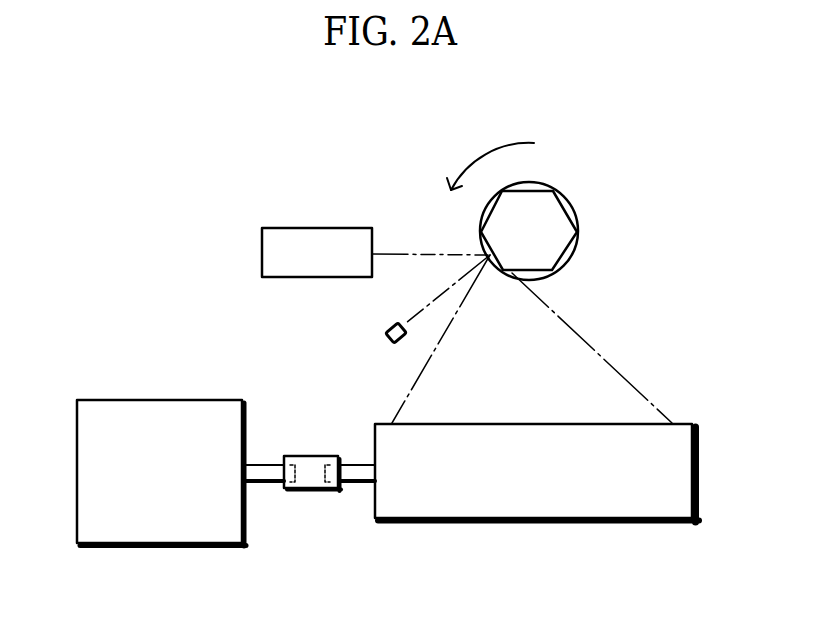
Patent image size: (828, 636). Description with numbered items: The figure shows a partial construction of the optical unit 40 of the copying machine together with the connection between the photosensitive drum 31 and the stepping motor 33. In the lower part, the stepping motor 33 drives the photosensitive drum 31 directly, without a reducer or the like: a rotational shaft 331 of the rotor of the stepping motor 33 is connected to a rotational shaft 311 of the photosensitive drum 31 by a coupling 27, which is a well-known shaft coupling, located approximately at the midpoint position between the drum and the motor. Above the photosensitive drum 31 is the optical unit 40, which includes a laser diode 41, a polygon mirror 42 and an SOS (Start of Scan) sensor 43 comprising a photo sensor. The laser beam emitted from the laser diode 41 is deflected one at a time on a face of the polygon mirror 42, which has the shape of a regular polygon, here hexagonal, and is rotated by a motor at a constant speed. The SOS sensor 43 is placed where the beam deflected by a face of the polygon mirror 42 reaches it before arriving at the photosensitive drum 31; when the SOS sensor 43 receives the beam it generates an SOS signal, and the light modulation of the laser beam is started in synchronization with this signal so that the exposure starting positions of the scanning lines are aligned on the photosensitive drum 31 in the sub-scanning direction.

The optical unit 40 is at (436, 131).
The laser diode 41 is at (300, 228).
The polygon mirror 42 is at (548, 222).
The SOS sensor 43 is at (387, 340).
The stepping motor 33 is at (145, 400).
The rotational shaft 331 is at (257, 464).
The coupling 27 is at (310, 490).
The rotational shaft 311 is at (358, 484).
The photosensitive drum 31 is at (467, 520).